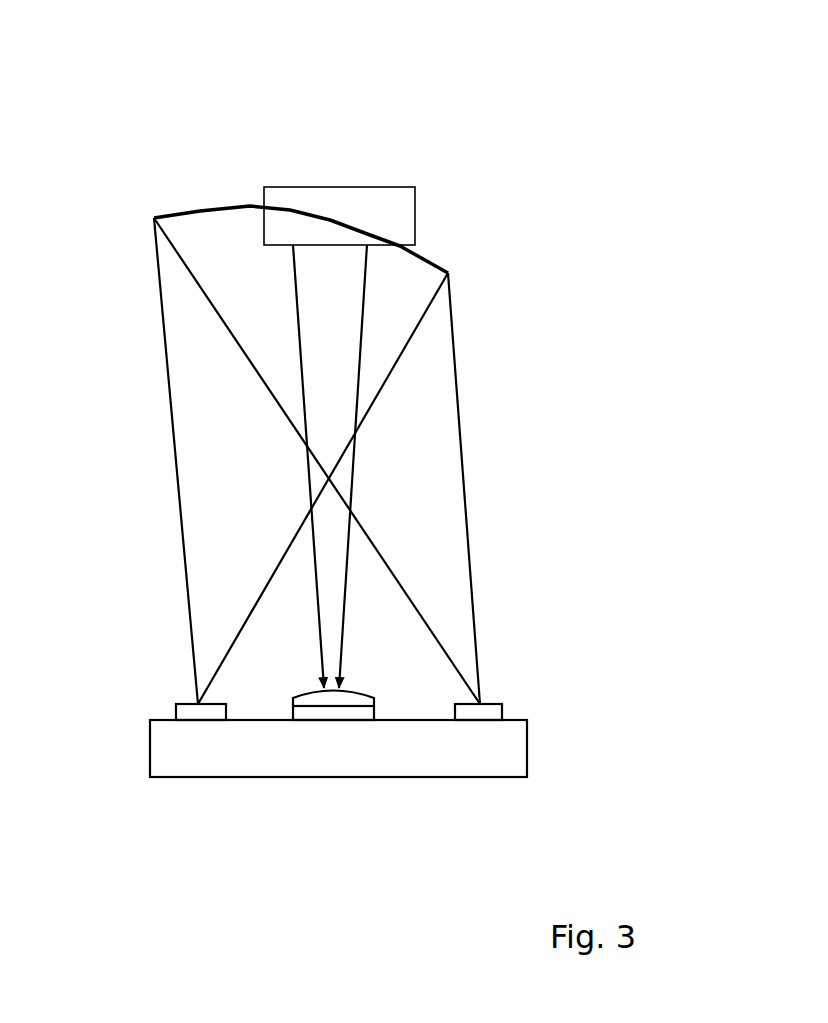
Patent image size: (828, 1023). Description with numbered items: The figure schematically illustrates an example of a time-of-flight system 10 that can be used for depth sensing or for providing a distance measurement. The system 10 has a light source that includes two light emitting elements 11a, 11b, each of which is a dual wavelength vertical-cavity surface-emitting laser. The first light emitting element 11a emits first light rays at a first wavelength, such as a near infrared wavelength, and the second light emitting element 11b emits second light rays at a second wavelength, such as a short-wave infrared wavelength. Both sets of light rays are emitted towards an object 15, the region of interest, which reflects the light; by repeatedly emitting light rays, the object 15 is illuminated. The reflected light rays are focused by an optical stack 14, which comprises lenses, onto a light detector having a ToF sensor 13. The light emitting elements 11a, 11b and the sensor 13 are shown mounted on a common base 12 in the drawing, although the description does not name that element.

The time-of-flight (ToF) system 10 is at (380, 64).
The first light emitting element 11a is at (173, 718).
The second light emitting element 11b is at (503, 710).
The substrate 12 is at (331, 781).
The ToF sensor 13 is at (374, 712).
The optical stack 14 is at (293, 705).
The object 15 is at (261, 198).